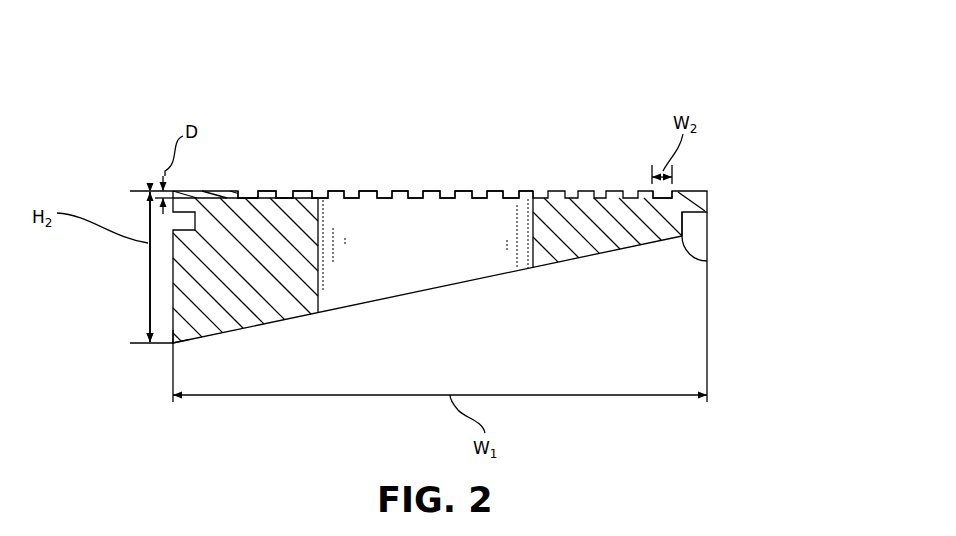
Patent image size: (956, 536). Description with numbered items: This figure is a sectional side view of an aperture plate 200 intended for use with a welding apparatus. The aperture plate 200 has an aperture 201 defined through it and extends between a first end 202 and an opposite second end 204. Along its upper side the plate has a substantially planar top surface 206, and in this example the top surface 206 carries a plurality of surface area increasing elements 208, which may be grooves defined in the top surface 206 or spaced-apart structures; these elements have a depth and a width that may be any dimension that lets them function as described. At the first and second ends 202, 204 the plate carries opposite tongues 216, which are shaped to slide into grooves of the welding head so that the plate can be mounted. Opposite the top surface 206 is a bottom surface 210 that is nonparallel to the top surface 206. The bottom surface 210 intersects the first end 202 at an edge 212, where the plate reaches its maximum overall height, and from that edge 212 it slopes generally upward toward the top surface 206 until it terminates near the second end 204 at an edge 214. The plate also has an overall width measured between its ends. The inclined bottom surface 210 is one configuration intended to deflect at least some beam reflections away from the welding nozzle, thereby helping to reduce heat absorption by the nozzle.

The aperture plate 200 is at (628, 72).
The aperture 201 is at (487, 254).
The first end 202 is at (108, 288).
The second end 204 is at (740, 237).
The top surface 206 is at (688, 192).
The surface area increasing elements 208 is at (317, 190).
The bottom surface 210 is at (302, 316).
The edge 212 is at (172, 347).
The edge 214 is at (707, 261).
The tongues 216 is at (197, 188).